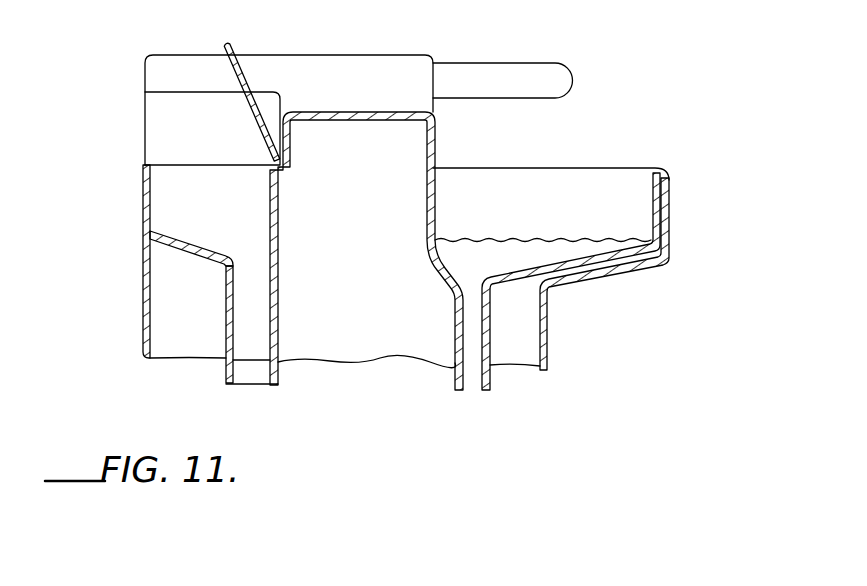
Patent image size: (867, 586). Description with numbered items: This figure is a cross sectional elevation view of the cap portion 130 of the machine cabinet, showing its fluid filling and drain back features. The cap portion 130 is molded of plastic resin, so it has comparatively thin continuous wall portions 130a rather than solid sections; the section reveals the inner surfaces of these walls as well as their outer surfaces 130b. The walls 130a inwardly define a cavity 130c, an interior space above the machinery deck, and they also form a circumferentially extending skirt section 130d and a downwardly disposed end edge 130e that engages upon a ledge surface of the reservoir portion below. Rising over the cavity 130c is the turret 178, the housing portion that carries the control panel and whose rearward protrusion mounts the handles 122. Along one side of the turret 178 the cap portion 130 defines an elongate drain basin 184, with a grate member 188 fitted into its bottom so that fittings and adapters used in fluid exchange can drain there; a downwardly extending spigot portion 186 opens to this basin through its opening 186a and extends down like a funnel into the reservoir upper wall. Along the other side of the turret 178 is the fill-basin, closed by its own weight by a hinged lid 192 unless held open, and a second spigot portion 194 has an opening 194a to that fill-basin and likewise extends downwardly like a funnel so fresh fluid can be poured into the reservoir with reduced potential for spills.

The cap portion 130 is at (681, 165).
The handle 122 is at (530, 63).
The turret 178 is at (352, 114).
The wall portions 130a is at (436, 148).
The outer surfaces 130b is at (143, 258).
The cavity 130c is at (458, 232).
The skirt section 130d is at (550, 333).
The end edge 130e is at (150, 360).
The drain basin 184 is at (565, 209).
The grate member 188 is at (563, 239).
The spigot portion 186 is at (512, 294).
The outlet opening 186a is at (466, 298).
The hinged lid 192 is at (238, 64).
The spigot portion 194 is at (210, 313).
The opening 194a is at (240, 260).